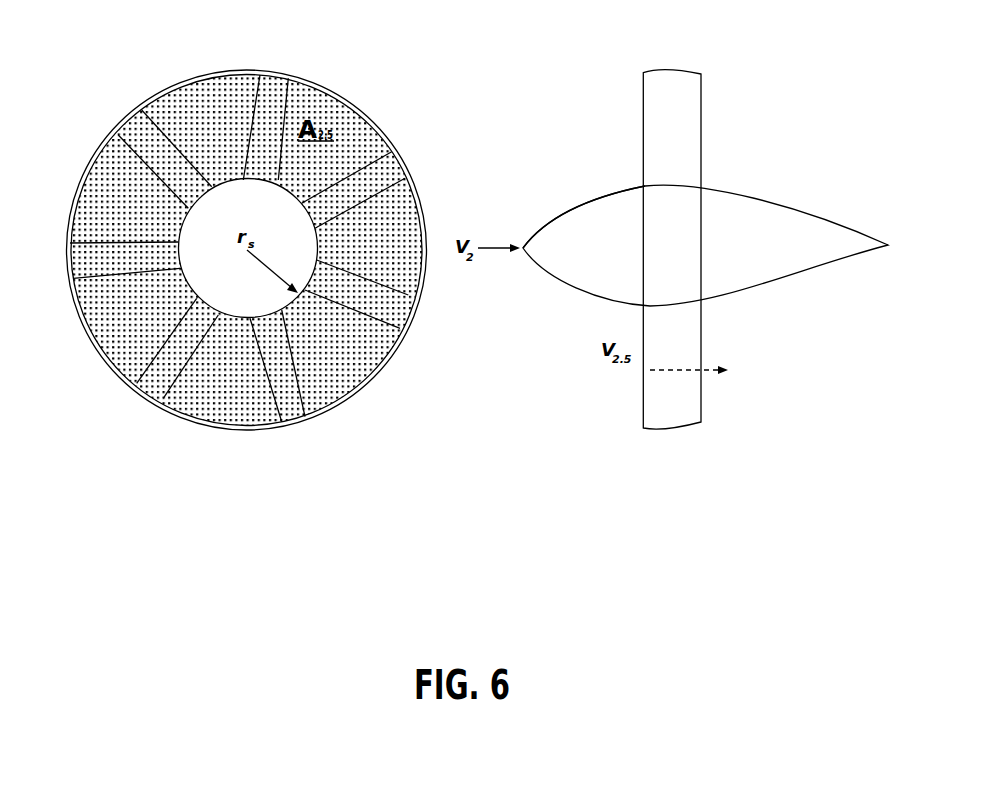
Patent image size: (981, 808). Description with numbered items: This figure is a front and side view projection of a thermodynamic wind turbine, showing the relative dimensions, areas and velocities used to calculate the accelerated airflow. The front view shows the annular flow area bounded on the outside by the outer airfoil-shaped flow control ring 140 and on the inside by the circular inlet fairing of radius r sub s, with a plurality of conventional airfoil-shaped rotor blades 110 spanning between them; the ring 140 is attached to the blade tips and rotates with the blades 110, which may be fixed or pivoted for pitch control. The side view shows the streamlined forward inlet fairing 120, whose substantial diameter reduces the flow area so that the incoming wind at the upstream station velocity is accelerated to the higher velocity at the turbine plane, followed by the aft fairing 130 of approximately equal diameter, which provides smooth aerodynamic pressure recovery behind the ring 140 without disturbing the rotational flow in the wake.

The outer airfoil-shaped flow control ring 140 is at (177, 84).
The rotor blades 110 is at (290, 387).
The forward inlet fairing 120 is at (583, 222).
The aft fairing 130 is at (755, 265).